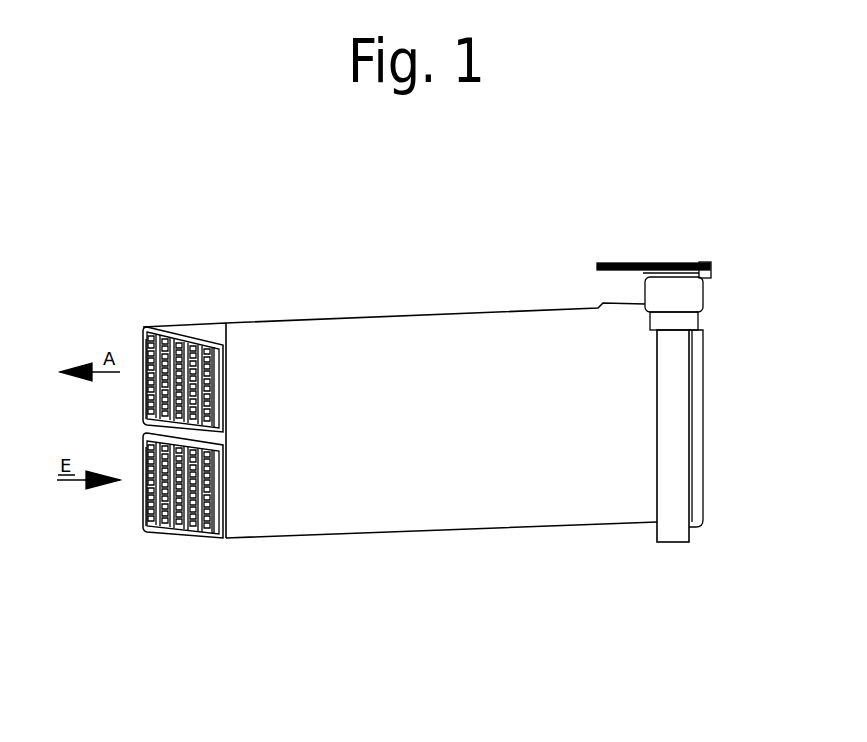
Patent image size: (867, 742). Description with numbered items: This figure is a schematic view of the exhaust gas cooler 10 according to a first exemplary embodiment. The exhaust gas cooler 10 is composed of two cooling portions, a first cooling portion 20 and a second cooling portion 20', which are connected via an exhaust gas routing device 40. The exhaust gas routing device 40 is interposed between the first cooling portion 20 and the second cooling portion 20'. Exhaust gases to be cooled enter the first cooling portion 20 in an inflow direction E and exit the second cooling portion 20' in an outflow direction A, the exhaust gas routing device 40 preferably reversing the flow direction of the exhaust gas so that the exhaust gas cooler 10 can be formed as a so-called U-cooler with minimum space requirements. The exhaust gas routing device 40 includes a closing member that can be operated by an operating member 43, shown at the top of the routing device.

The exhaust gas cooler 10 is at (372, 254).
The first cooling portion 20 is at (289, 502).
The second cooling portion 20' is at (207, 272).
The exhaust gas routing device 40 is at (720, 433).
The operating member 43 is at (632, 262).